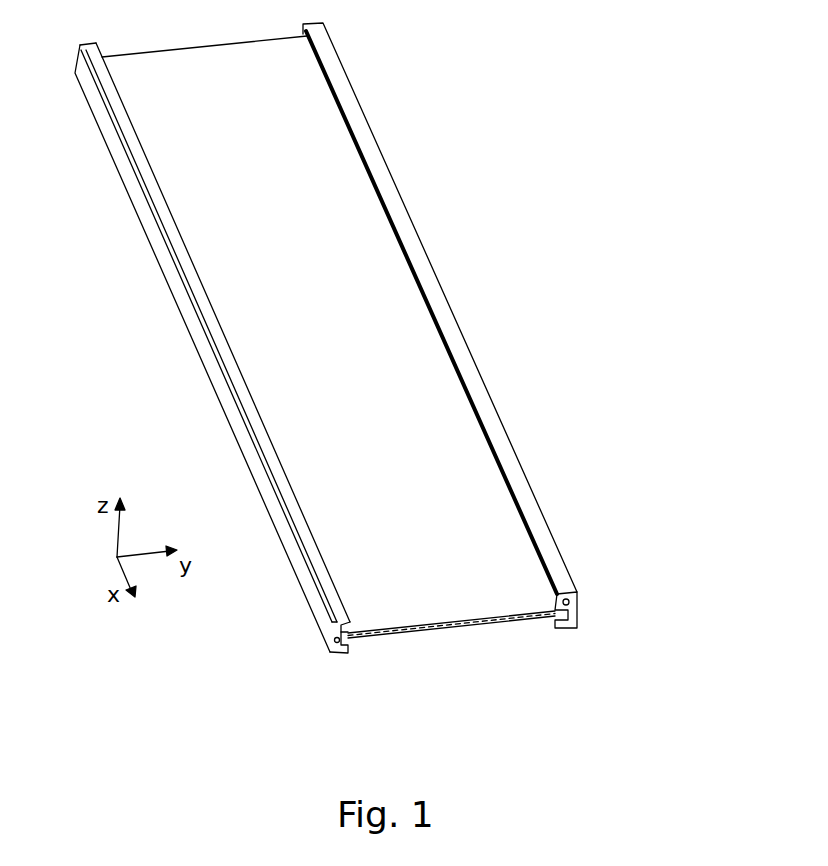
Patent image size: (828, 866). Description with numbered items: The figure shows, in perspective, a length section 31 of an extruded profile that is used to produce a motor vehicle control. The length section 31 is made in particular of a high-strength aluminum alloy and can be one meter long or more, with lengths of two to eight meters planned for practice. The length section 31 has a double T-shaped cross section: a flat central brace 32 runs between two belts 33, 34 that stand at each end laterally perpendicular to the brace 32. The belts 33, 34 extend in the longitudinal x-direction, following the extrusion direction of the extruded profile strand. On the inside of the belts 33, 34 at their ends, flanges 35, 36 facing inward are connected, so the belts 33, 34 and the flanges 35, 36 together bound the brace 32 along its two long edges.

The length section 31 is at (438, 277).
The central brace 32 is at (440, 627).
The belt 33 is at (578, 607).
The belt 34 is at (192, 327).
The flange 35 is at (527, 498).
The flange 36 is at (342, 658).